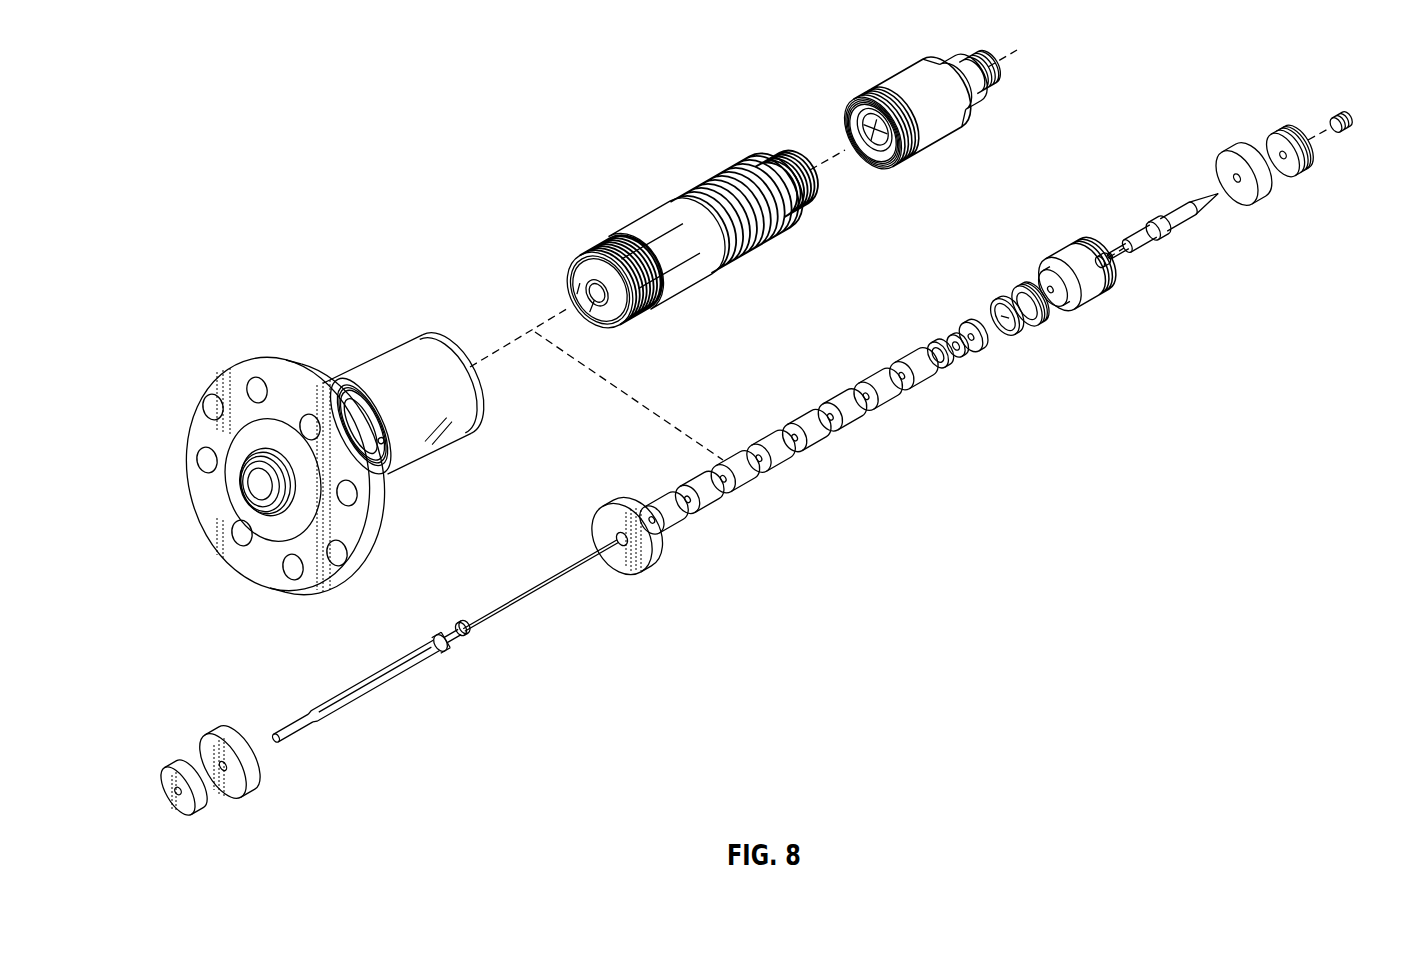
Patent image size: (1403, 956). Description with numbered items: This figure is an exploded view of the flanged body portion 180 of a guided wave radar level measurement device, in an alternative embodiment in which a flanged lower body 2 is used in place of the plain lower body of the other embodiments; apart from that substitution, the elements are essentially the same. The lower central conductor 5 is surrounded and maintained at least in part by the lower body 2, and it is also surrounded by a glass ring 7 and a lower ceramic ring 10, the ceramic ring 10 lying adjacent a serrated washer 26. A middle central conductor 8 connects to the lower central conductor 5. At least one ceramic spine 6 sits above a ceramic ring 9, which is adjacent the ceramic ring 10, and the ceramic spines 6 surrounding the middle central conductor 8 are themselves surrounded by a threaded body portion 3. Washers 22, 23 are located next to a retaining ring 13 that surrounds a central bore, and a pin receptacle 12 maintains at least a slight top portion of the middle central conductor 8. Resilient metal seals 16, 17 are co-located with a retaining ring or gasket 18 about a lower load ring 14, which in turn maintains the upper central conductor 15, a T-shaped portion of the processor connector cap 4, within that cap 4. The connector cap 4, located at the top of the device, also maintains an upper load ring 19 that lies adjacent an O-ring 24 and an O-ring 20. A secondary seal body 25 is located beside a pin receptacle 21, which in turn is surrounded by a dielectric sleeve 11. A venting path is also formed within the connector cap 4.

The pressure transducer assembly 180 is at (218, 238).
The lower body 2 is at (393, 361).
The threaded body portion 3 is at (686, 185).
The processor connector cap 4 is at (888, 70).
The lower central conductor 5 is at (303, 746).
The ceramic spine 6 is at (684, 530).
The glass ring 7 is at (210, 810).
The middle central conductor 8 is at (548, 593).
The ceramic ring 9 is at (637, 568).
The lower ceramic ring 10 is at (270, 786).
The dielectric sleeve 11 is at (1354, 114).
The pin receptacle 12 is at (993, 333).
The retaining ring 13 is at (932, 348).
The lower load ring 14 is at (1096, 306).
The upper central conductor 15 is at (1157, 218).
The resilient metal seal 16 is at (1107, 268).
The resilient metal seal 17 is at (996, 298).
The retaining ring or gasket 18 is at (1028, 285).
The upper load ring 19 is at (1241, 156).
The O-ring 20 is at (1310, 167).
The pin receptacle 21 is at (1212, 187).
The washer 22 is at (966, 331).
The washer 23 is at (965, 360).
The O-ring 24 is at (1297, 131).
The secondary seal body 25 is at (1316, 150).
The serrated washer 26 is at (473, 644).